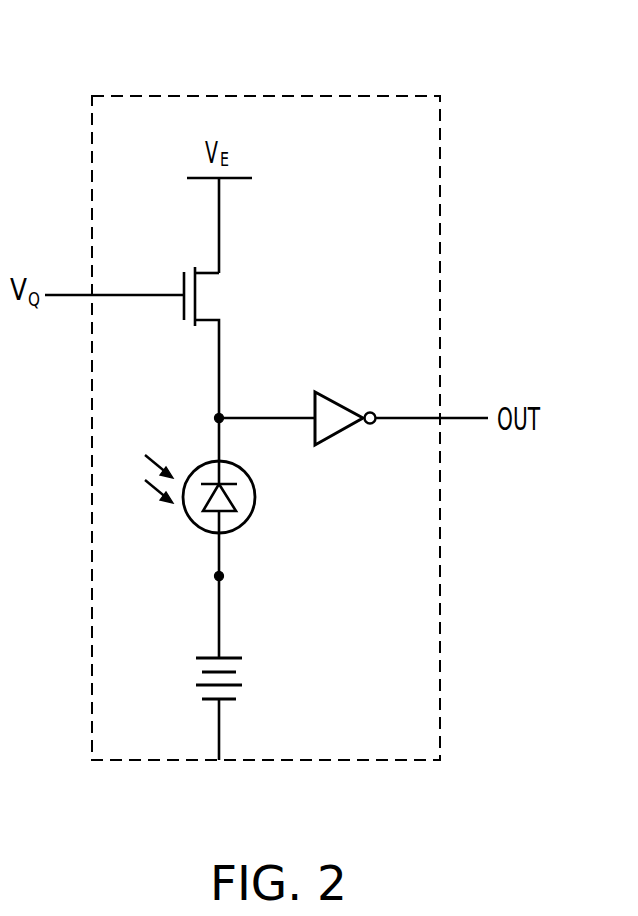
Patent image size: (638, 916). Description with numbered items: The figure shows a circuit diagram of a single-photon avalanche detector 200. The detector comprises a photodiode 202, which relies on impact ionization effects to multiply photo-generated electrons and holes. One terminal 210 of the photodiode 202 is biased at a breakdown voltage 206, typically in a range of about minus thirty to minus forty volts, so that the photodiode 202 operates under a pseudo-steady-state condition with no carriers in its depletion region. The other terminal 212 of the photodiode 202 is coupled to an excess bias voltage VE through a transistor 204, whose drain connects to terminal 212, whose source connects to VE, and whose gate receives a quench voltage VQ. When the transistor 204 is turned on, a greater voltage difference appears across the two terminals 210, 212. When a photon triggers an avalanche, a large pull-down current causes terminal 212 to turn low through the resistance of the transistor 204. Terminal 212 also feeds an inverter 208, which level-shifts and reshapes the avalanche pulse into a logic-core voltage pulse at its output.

The single-photon avalanche detector 200 is at (578, 57).
The photodiode 202 is at (254, 497).
The transistor 204 is at (215, 296).
The breakdown voltage 206 is at (250, 680).
The inverter 208 is at (342, 402).
The terminal 210 is at (244, 575).
The terminal 212 is at (265, 400).